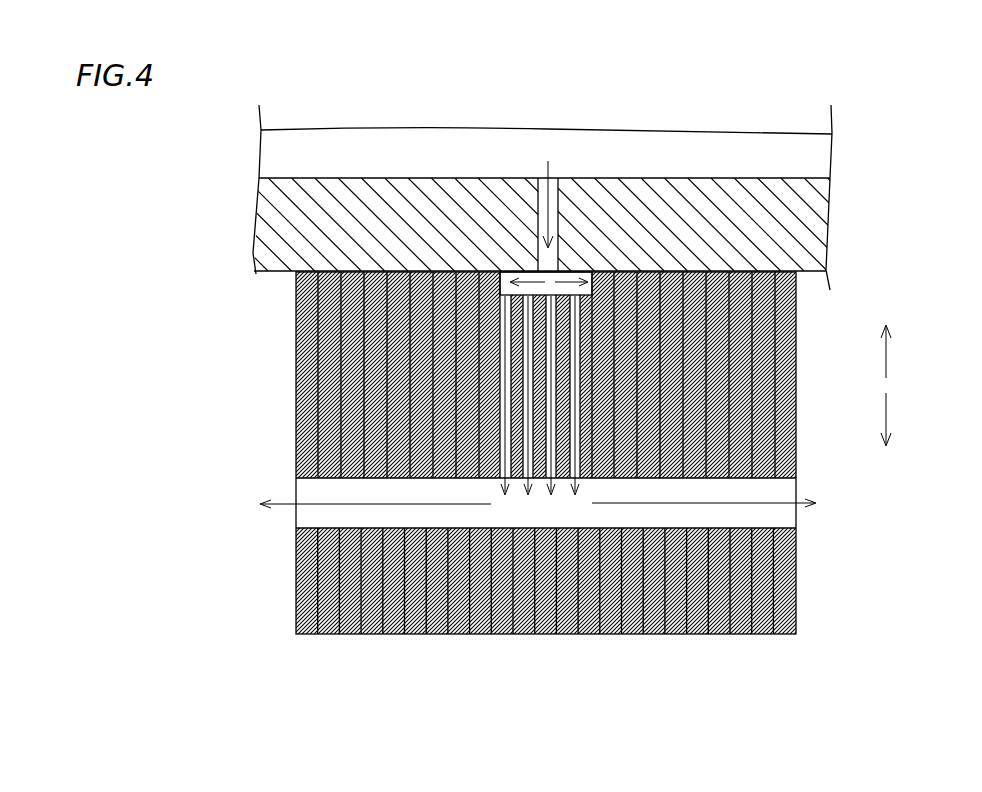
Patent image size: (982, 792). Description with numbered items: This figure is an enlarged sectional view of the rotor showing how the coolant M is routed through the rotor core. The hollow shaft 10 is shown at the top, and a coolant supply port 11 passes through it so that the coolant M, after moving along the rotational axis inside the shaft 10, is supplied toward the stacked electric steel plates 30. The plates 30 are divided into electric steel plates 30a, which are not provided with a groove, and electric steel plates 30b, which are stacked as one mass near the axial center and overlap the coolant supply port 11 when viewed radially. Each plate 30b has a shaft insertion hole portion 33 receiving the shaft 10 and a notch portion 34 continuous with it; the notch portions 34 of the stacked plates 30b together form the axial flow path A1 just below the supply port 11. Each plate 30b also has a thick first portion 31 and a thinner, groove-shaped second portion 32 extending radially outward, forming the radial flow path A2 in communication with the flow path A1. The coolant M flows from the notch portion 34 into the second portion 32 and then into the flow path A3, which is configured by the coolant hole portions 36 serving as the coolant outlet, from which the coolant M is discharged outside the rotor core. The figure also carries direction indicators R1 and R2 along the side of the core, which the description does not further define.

The shaft 10 is at (370, 137).
The coolant supply port 11 is at (530, 172).
The shaft insertion hole portion 33 is at (343, 262).
The notch portion 34 is at (565, 286).
The coolant hole portion 36 is at (313, 471).
The second portion 32 is at (572, 474).
The first portion 31 is at (560, 518).
The electric steel plate 30 is at (546, 487).
The electric steel plate 30a is at (484, 643).
The electric steel plate 30b is at (584, 643).
The coolant M is at (549, 189).
The flow path A1 is at (527, 263).
The flow path A2 is at (568, 339).
The flow path A3 is at (540, 504).
The upward direction R1 is at (866, 351).
The downward direction R2 is at (866, 419).